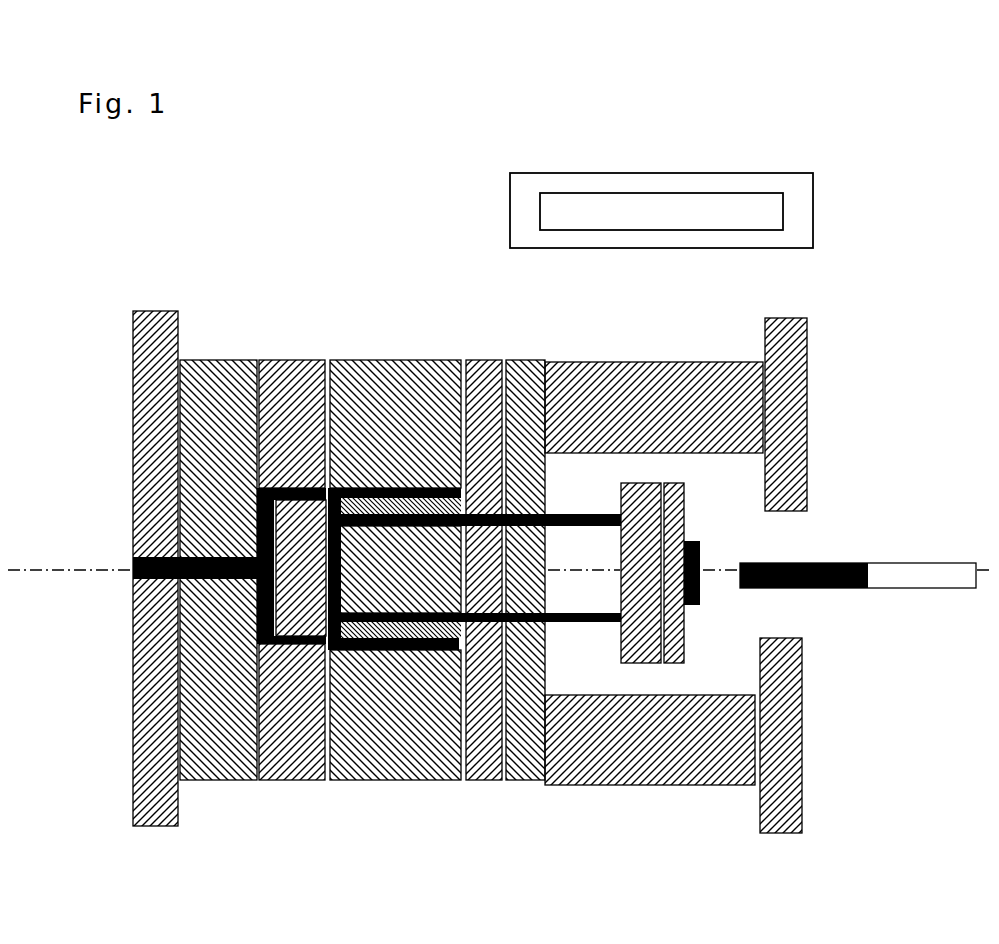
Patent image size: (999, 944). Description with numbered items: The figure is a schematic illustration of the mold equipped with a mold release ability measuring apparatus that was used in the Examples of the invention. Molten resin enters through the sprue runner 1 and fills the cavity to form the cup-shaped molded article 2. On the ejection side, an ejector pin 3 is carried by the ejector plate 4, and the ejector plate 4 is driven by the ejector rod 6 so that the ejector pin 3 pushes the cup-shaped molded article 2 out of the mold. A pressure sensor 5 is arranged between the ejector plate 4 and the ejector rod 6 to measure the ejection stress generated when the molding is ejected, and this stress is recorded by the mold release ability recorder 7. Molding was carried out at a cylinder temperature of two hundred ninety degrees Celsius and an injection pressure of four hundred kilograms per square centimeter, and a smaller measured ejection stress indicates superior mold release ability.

The sprue runner 1 is at (120, 615).
The cup-shaped molded article 2 is at (403, 645).
The ejector pin 3 is at (594, 503).
The ejector plate 4 is at (608, 635).
The pressure sensor 5 is at (689, 605).
The ejector rod 6 is at (842, 592).
The mold release ability recorder 7 is at (815, 210).